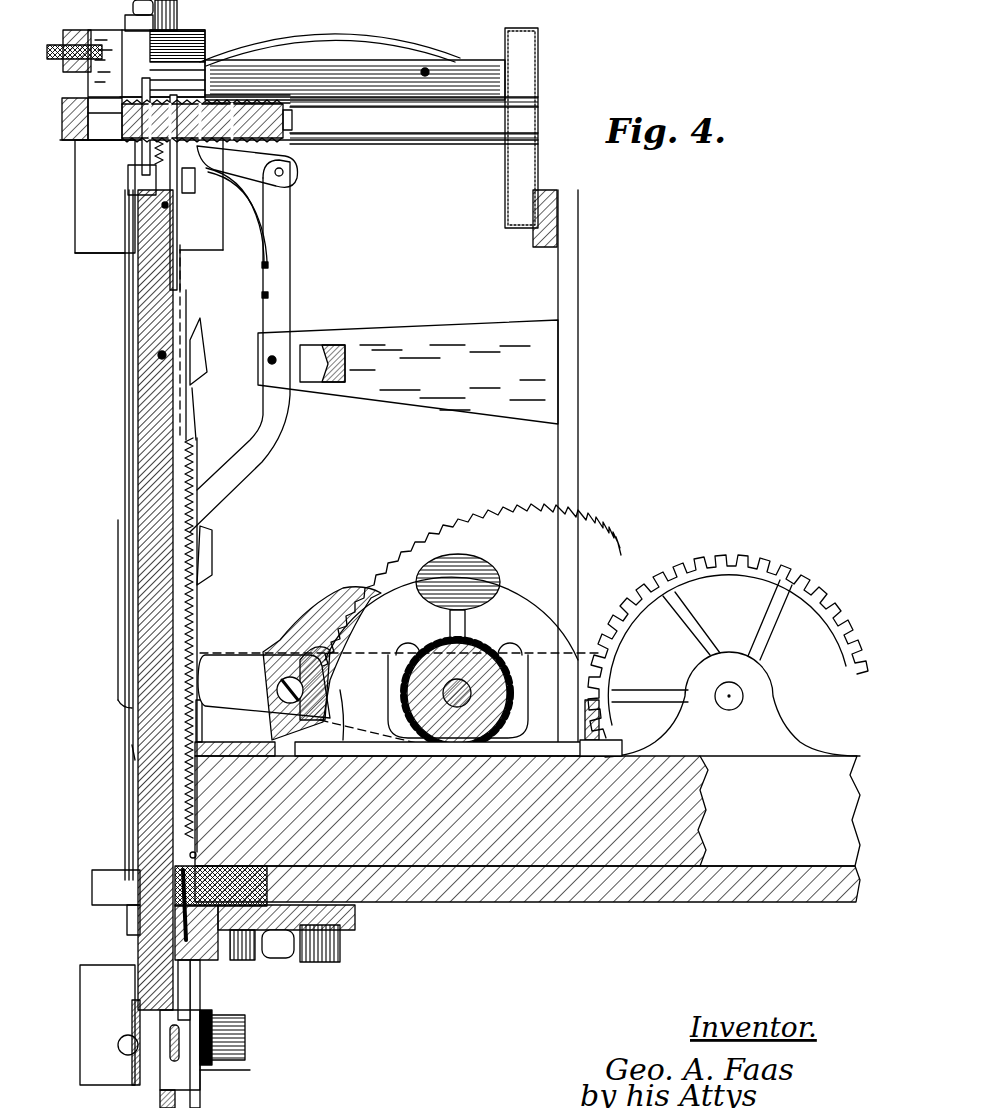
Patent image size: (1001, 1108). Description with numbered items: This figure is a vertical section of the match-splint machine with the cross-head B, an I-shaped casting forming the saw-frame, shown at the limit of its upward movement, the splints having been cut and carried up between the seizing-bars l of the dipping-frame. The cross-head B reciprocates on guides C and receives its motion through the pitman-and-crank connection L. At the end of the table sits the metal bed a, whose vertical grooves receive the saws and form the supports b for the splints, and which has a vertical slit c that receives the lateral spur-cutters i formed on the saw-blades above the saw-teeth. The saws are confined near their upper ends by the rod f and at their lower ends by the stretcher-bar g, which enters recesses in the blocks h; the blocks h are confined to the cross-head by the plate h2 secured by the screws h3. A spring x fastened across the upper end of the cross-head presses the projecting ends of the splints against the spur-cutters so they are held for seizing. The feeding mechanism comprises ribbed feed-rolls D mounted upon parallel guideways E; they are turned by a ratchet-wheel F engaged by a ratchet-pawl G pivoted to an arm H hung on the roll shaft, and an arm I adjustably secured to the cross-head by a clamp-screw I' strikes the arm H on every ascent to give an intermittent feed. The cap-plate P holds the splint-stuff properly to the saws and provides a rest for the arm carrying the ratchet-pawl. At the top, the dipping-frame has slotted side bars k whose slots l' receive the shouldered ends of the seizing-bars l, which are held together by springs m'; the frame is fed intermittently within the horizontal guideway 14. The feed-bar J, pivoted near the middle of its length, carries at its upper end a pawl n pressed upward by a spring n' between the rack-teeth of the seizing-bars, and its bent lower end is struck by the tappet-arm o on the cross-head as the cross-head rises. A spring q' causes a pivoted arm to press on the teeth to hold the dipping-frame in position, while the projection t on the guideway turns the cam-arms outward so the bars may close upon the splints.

The horizontal guideway 14 is at (319, 392).
The spring q' is at (330, 36).
The inclined or curved projection t is at (126, 145).
The springs m' is at (247, 90).
The side bars k is at (82, 117).
The slots l' is at (105, 119).
The seizing-bars l is at (207, 121).
The cross-head B is at (124, 612).
The spring x is at (140, 182).
The pitman-and-crank connection L is at (118, 524).
The guides C is at (132, 750).
The rod f is at (170, 205).
The lateral spur-cutters i is at (180, 252).
The rod a' is at (189, 356).
The pawl n is at (247, 164).
The spring n' is at (236, 215).
The feed-bar J is at (240, 346).
The cap-plate P is at (374, 527).
The metal bed a is at (355, 672).
The tappet-arm o is at (212, 555).
The ratchet-wheel F is at (470, 585).
The arm H is at (399, 699).
The ratchet-pawl G is at (322, 663).
The feed-rolls D is at (457, 655).
The arm I is at (226, 906).
The guideways E is at (527, 829).
The vertical slit c is at (189, 856).
The supports b is at (180, 883).
The stretcher-bar g is at (180, 1059).
The clamp-screw I' is at (229, 1037).
The blocks h is at (232, 1071).
The plate h2 is at (132, 1012).
The screws h3 is at (126, 1048).